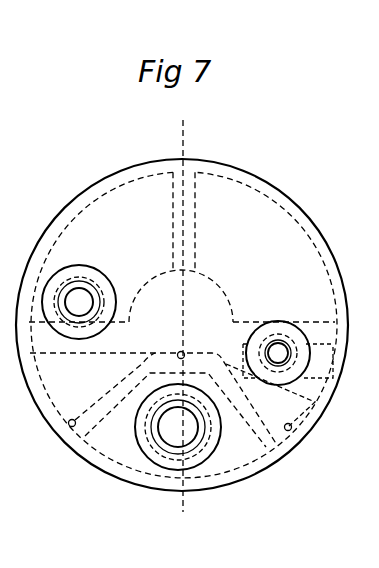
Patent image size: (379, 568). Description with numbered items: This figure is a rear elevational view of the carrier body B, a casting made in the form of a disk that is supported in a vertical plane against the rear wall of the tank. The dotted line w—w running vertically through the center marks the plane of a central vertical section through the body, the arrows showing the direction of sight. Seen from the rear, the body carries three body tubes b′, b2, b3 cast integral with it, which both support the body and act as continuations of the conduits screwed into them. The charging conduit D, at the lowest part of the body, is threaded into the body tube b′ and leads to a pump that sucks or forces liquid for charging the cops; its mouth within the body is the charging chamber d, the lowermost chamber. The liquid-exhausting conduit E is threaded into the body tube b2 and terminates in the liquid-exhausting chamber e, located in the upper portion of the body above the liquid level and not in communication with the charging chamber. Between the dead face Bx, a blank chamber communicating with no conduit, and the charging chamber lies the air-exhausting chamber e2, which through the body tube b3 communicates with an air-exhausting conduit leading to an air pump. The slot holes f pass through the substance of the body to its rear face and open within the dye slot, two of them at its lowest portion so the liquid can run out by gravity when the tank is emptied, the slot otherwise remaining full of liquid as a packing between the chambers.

The carrier body B is at (97, 165).
The dead face Bx is at (183, 325).
The liquid-exhausting chamber e is at (120, 215).
The dotted line w— w is at (217, 512).
The liquid-exhausting conduit E is at (79, 302).
The body tube b2 is at (98, 283).
The charging conduit D is at (178, 427).
The body tube b′ is at (202, 443).
The air-exhausting chamber e2 is at (279, 373).
The body tube b3 is at (300, 353).
The charging chamber d is at (153, 403).
The slot holes f is at (286, 425).